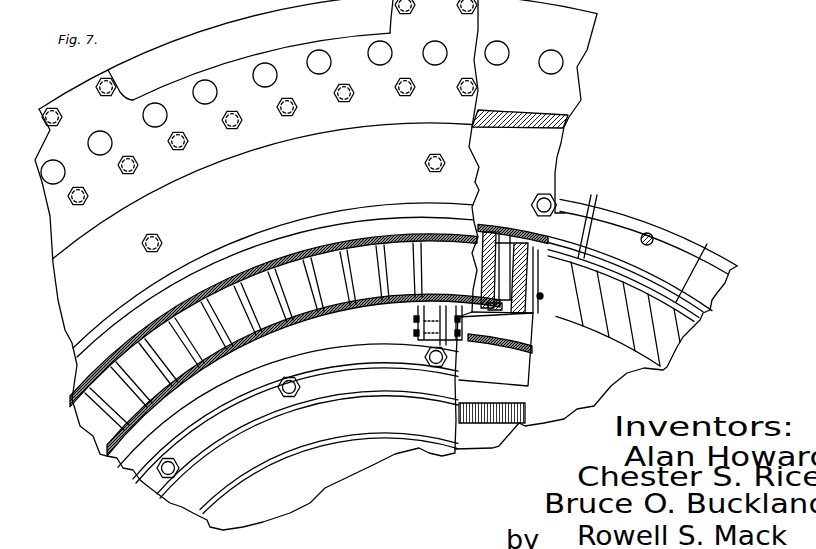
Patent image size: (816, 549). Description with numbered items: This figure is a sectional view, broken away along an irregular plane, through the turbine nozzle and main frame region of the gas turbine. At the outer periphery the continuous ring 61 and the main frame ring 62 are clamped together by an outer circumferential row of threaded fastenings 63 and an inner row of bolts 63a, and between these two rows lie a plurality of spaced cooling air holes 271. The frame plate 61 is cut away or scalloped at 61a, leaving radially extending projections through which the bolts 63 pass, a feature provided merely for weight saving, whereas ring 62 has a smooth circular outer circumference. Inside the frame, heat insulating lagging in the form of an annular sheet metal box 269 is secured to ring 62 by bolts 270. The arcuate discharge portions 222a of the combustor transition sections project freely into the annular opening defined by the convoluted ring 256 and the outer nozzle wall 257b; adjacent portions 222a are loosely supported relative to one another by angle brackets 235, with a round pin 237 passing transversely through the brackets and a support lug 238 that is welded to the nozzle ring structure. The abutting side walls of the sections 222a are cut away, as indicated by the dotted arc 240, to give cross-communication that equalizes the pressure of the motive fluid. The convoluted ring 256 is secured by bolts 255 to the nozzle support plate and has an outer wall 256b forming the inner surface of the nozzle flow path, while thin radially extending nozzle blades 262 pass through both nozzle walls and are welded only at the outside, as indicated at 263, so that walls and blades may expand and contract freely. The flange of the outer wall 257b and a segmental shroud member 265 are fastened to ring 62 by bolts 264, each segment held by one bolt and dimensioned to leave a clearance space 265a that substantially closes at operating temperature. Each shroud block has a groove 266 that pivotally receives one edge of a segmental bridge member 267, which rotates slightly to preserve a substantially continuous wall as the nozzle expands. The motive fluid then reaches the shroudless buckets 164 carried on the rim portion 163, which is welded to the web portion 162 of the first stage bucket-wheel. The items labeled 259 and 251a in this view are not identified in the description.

The continuous ring (main frame ring) 61 is at (443, 19).
The scallops 61a is at (291, 49).
The main frame ring 62 is at (580, 29).
The threaded fastenings 63 is at (62, 117).
The inner row of bolts 63a is at (172, 145).
The cooling air holes 271 is at (257, 82).
The annular box 269 is at (467, 137).
The bolts 270 is at (424, 164).
The bolts 264 is at (546, 193).
The nozzle blades 262 is at (488, 230).
The weld 263 is at (501, 231).
The outer axially extending wall 257b is at (513, 240).
The retaining rail 259 is at (436, 237).
The dotted arc (side wall cutouts) 240 is at (446, 273).
The arcuate discharge section 222a is at (264, 276).
The angle bracket 235 is at (414, 309).
The round pin 237 is at (414, 324).
The support lug 238 is at (427, 341).
The outer wall of convoluted ring 256b is at (510, 316).
The convoluted ring 256 is at (458, 340).
The shroud strip 251a is at (558, 252).
The bridge member 267 is at (569, 253).
The shroud member 265 is at (598, 214).
The clearance space 265a is at (588, 232).
The groove 266 is at (690, 288).
The buckets 164 is at (636, 295).
The circumferential rim portion 163 is at (628, 346).
The radially extending web portion 162 is at (345, 413).
The bolts 255 is at (302, 384).